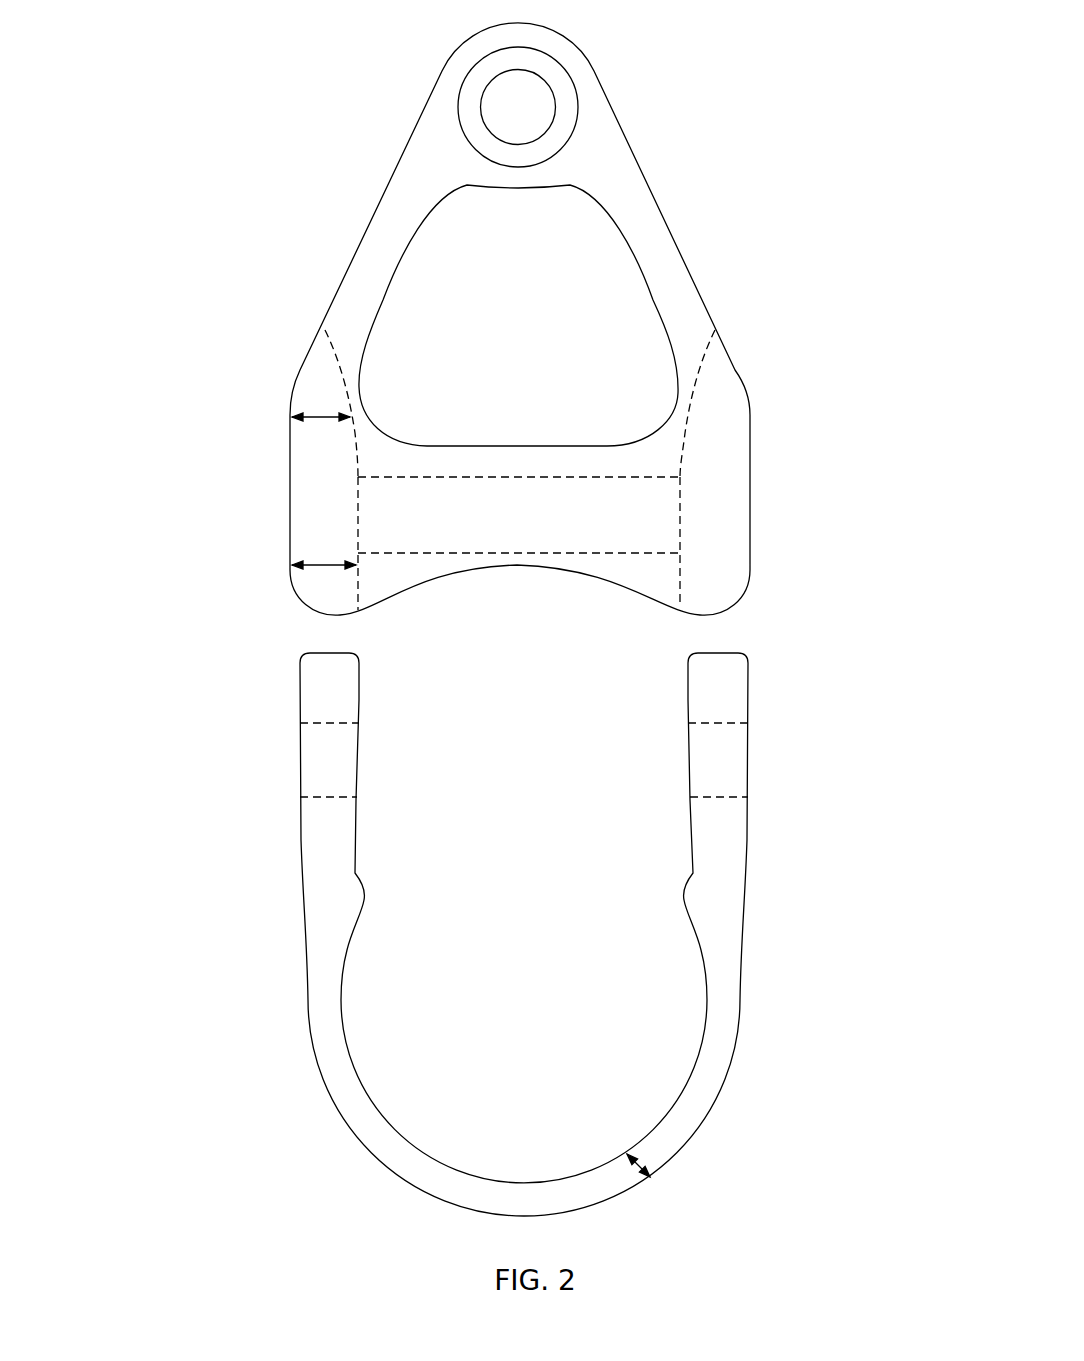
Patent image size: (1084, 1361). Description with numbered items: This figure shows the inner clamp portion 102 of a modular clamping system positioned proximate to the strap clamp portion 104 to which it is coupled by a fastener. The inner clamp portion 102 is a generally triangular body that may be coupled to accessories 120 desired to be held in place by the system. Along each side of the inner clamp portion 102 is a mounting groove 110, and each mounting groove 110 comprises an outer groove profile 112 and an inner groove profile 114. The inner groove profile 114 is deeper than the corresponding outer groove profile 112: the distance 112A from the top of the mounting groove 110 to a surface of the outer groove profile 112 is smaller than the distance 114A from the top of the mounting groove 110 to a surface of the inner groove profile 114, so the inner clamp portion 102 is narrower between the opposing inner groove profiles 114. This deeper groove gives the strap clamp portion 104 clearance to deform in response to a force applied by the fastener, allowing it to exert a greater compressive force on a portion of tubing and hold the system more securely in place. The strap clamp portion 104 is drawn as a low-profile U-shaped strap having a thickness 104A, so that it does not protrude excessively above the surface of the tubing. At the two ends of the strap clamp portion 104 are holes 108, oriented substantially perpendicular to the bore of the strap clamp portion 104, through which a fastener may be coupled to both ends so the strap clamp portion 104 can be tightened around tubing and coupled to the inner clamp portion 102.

The accessories 120 is at (415, 90).
The inner clamp portion 102 is at (347, 322).
The outer groove profile 112 is at (700, 392).
The distance 112A is at (288, 421).
The mounting groove 110 is at (717, 500).
The inner groove profile 114 is at (683, 575).
The distance 114A is at (288, 569).
The strap clamp portion 104 is at (327, 1073).
The thickness 104A is at (654, 1186).
The holes 108 is at (318, 748).